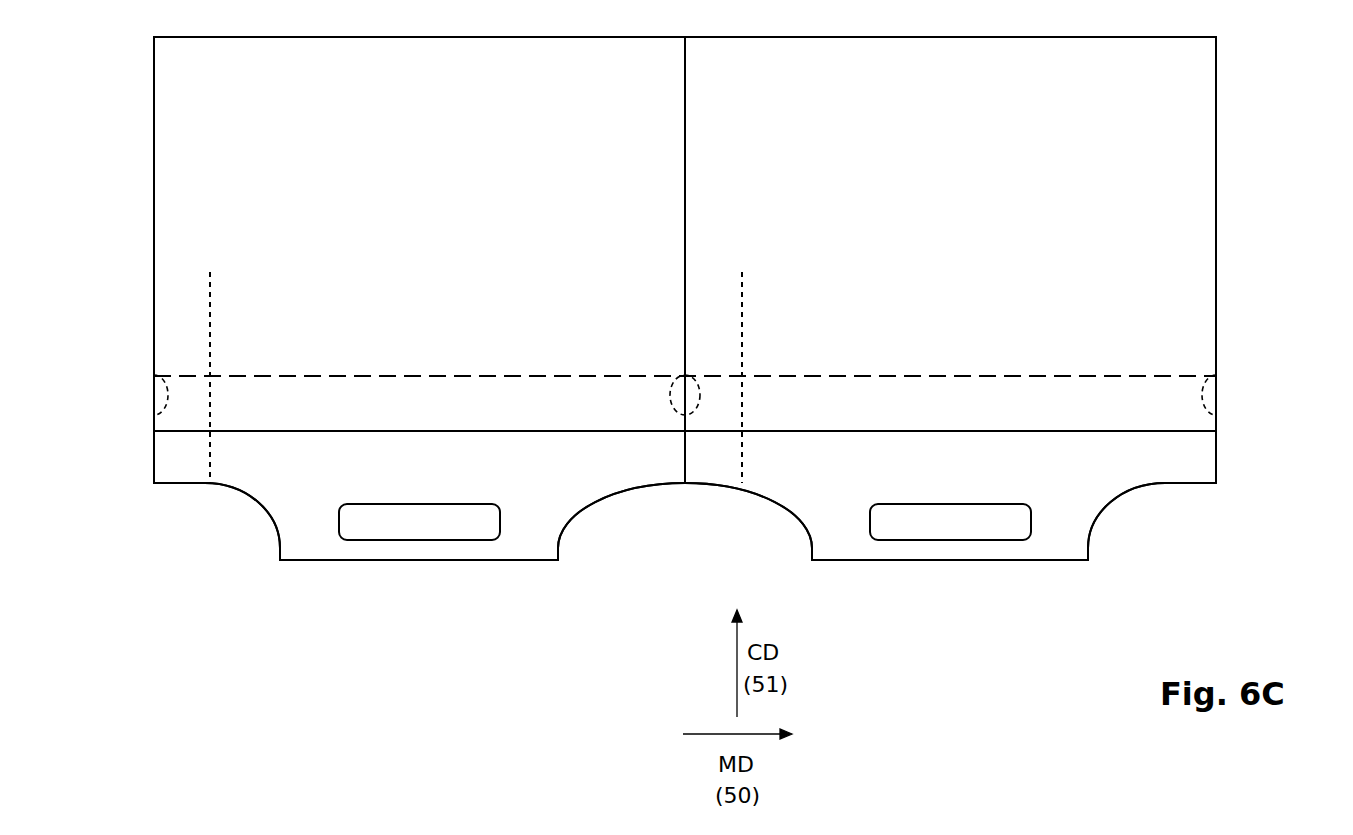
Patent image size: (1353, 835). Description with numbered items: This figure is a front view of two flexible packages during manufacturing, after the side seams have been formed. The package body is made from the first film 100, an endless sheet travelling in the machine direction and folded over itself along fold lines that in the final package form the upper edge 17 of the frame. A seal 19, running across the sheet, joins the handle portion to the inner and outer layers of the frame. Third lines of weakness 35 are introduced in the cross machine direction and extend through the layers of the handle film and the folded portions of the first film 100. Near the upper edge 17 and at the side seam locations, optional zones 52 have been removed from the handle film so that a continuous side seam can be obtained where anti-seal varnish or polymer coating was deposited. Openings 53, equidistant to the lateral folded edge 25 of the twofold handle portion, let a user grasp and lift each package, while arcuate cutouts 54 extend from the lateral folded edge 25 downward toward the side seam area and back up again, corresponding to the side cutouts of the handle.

The first film 100 is at (1183, 206).
The upper edge 17 is at (300, 431).
The seal 19 is at (482, 375).
The third line of weakness 35 is at (212, 294).
The optional zones 52 is at (165, 378).
The openings 53 is at (388, 517).
The lateral folded edge 25 is at (483, 560).
The cutouts 54 is at (198, 497).